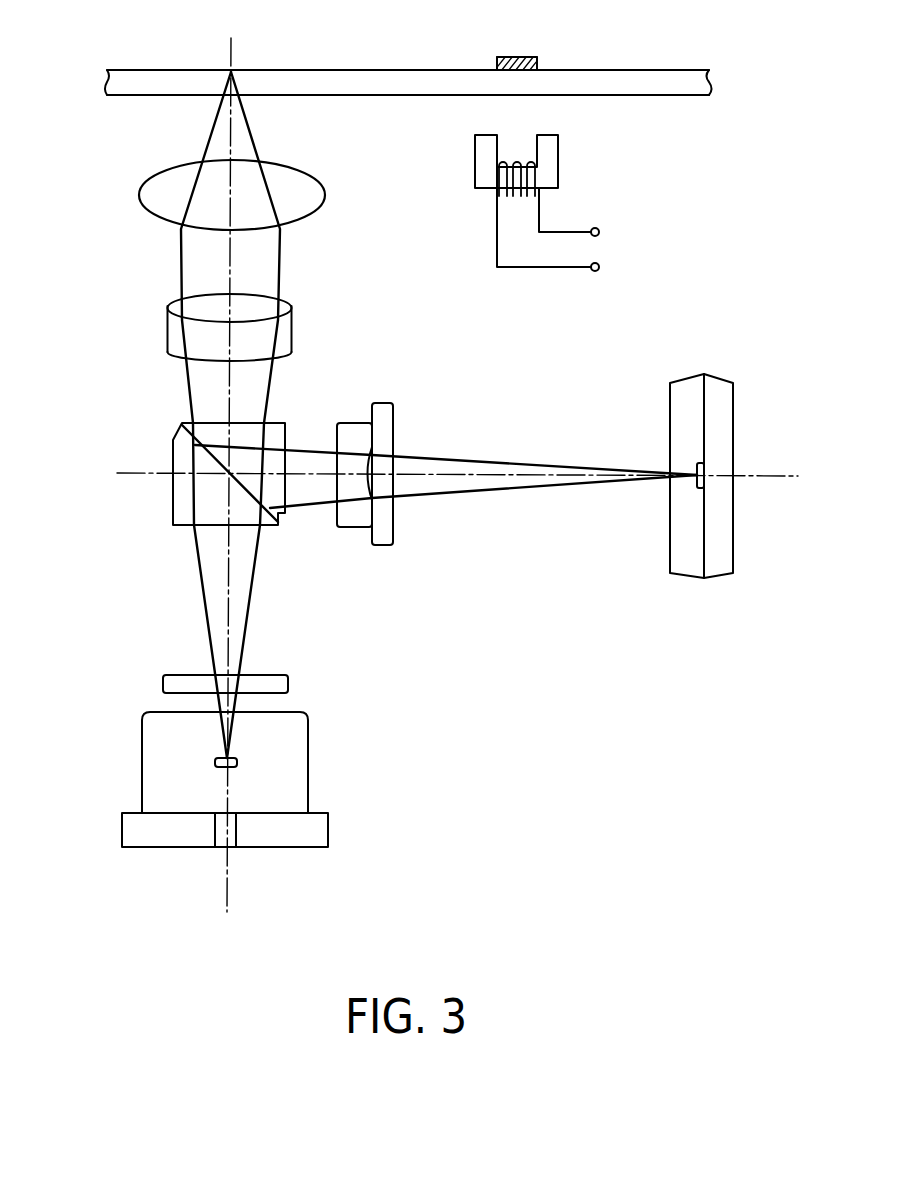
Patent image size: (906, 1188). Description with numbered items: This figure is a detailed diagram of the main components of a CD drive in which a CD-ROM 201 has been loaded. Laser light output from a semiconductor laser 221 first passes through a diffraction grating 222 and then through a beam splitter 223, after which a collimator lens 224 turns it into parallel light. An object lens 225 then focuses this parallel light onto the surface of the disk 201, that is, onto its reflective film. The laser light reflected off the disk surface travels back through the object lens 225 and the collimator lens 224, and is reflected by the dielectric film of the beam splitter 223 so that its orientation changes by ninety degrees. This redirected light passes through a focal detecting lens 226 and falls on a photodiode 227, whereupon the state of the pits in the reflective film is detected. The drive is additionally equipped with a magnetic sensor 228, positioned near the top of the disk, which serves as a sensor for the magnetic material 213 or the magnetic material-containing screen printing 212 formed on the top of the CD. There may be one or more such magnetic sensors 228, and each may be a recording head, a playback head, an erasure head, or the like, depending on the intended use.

The CD-ROM 201 is at (538, 58).
The magnetic material-containing screen printing 212 is at (538, 58).
The magnetic material 213 is at (538, 58).
The semiconductor laser 221 is at (308, 777).
The diffraction grating 222 is at (288, 683).
The beam splitter 223 is at (173, 430).
The collimator lens 224 is at (165, 325).
The object lens 225 is at (138, 193).
The focal detecting lens 226 is at (387, 545).
The photodiode 227 is at (683, 578).
The magnetic sensor 228 is at (482, 167).